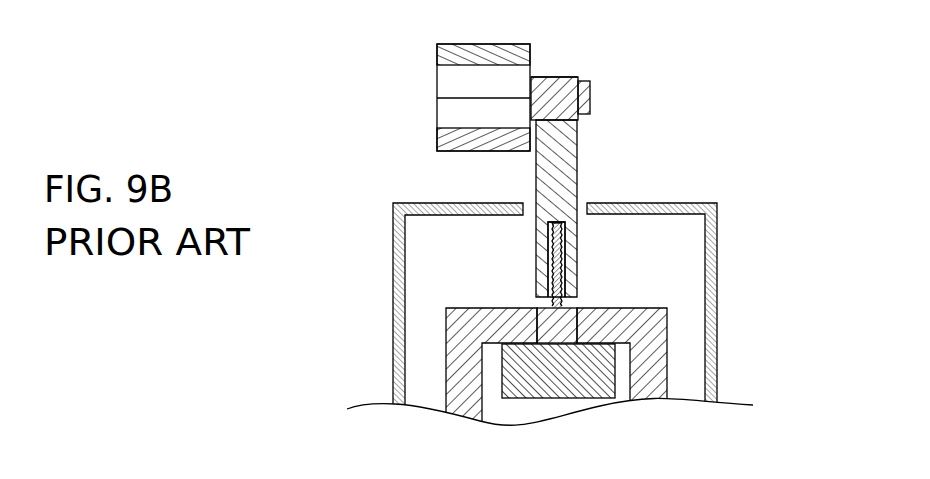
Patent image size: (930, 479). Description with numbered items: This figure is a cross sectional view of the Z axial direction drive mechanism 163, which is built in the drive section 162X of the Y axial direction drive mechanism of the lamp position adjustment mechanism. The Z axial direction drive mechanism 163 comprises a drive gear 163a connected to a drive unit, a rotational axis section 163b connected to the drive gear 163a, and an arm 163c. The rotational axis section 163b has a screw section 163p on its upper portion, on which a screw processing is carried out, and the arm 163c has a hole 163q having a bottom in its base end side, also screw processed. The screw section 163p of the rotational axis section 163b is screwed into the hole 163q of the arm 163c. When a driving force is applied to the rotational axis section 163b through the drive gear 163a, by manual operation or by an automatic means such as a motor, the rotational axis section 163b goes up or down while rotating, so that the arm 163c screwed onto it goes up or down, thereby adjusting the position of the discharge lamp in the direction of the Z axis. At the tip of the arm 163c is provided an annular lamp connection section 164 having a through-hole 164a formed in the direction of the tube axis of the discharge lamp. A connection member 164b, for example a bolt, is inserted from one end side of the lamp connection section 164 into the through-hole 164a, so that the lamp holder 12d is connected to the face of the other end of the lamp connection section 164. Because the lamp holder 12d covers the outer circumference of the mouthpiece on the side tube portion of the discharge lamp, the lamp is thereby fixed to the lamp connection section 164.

The lamp holder 12d is at (450, 118).
The lamp connection section 164 is at (563, 77).
The through-hole 164a is at (588, 82).
The connection member 164b is at (592, 100).
The arm 163c is at (562, 164).
The hole 163q is at (567, 248).
The screw section 163p is at (565, 273).
The drive section 162X is at (713, 307).
The Z axial direction drive mechanism 163 is at (667, 362).
The rotational axis section 163b is at (568, 320).
The drive gear 163a is at (558, 388).